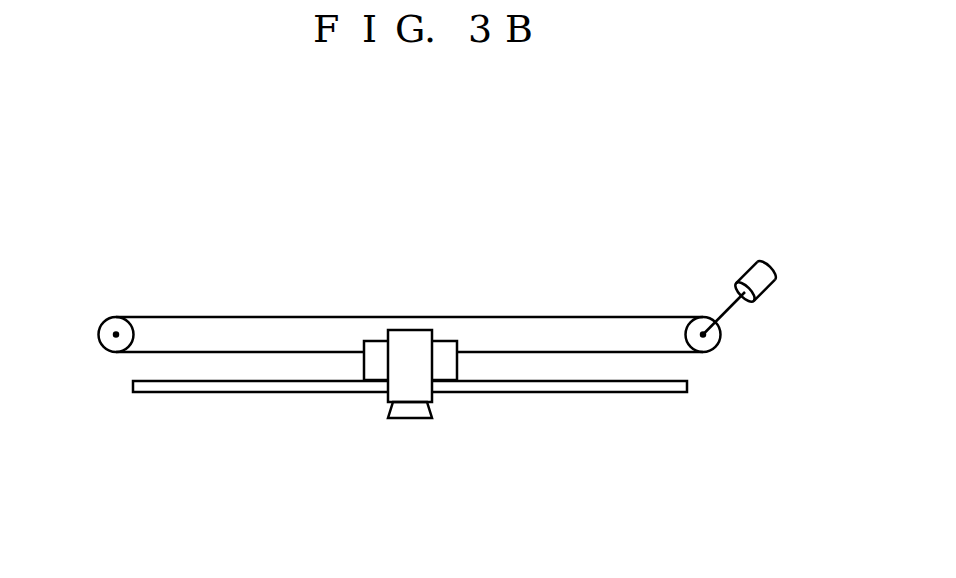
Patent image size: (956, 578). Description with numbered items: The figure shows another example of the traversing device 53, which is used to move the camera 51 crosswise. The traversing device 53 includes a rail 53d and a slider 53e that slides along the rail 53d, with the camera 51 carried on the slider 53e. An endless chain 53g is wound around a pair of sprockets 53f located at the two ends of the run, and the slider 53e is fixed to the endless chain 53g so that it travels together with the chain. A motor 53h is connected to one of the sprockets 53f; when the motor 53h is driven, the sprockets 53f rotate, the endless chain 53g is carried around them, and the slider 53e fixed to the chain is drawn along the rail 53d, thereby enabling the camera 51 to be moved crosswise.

The traversing device 53 is at (188, 245).
The camera 51 is at (413, 330).
The rail 53d is at (278, 381).
The slider 53e is at (375, 341).
The sprockets 53f is at (106, 323).
The endless chain 53g is at (568, 317).
The motor 53h is at (760, 266).